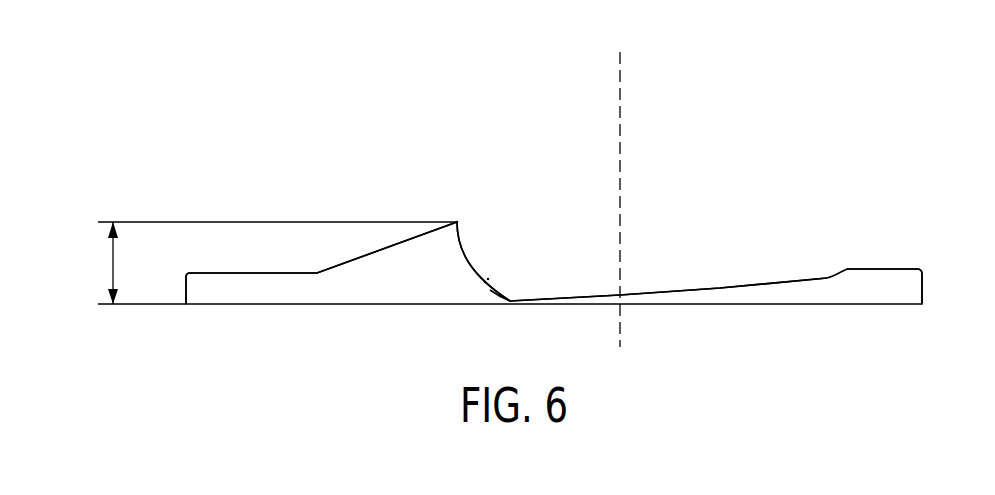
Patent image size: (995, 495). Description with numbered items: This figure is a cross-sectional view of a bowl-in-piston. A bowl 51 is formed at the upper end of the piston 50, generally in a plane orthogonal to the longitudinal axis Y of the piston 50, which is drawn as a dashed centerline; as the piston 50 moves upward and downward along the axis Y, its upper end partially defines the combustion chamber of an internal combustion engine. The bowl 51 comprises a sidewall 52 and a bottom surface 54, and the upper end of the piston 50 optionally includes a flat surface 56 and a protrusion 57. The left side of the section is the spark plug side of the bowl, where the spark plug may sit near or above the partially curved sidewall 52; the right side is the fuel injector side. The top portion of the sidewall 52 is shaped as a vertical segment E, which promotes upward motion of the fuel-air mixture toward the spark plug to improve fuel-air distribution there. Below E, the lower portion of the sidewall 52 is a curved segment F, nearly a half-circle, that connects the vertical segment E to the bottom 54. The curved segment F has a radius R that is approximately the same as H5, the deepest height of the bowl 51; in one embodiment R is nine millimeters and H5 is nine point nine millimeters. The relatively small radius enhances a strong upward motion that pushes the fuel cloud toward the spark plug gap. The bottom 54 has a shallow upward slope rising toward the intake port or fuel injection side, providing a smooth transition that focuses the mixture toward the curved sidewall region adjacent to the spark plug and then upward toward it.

The piston 50 is at (783, 116).
The bowl 51 is at (508, 299).
The sidewall 52 is at (465, 257).
The bottom surface 54 is at (722, 287).
The flat surface 56 is at (265, 272).
The protrusion 57 is at (392, 246).
The vertical segment E is at (457, 222).
The curved segment F is at (485, 282).
The radius R is at (494, 273).
The longitudinal axis Y is at (620, 183).
The deepest height of bowl H5 is at (269, 263).